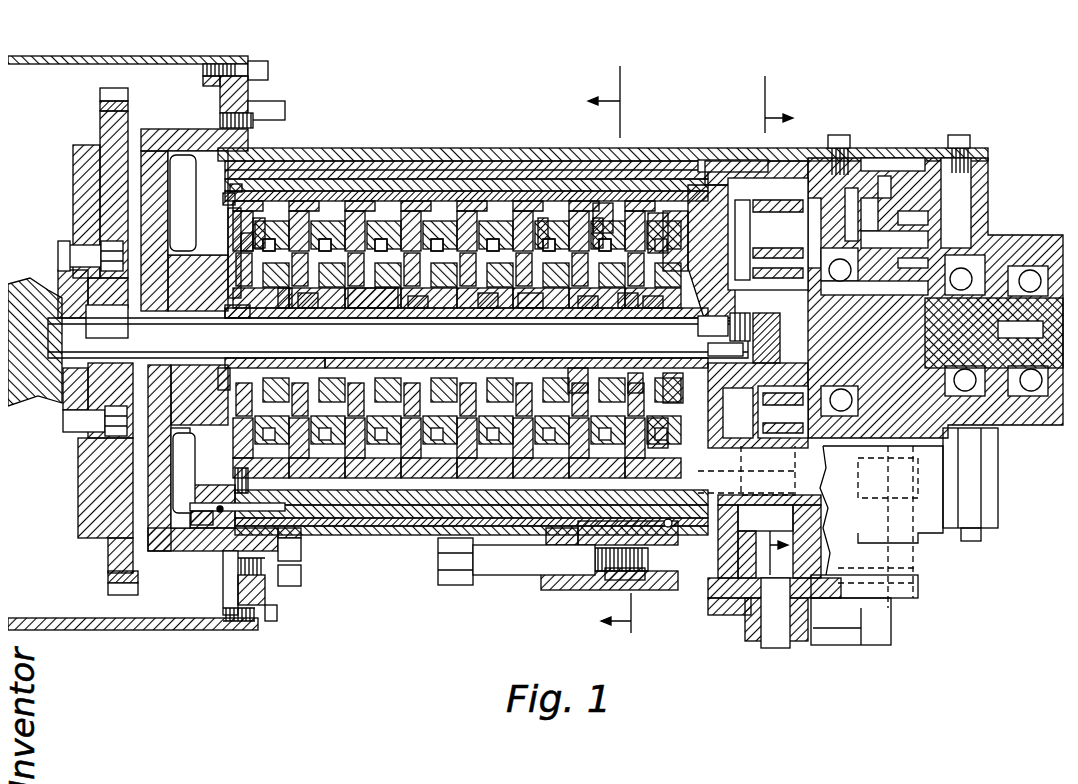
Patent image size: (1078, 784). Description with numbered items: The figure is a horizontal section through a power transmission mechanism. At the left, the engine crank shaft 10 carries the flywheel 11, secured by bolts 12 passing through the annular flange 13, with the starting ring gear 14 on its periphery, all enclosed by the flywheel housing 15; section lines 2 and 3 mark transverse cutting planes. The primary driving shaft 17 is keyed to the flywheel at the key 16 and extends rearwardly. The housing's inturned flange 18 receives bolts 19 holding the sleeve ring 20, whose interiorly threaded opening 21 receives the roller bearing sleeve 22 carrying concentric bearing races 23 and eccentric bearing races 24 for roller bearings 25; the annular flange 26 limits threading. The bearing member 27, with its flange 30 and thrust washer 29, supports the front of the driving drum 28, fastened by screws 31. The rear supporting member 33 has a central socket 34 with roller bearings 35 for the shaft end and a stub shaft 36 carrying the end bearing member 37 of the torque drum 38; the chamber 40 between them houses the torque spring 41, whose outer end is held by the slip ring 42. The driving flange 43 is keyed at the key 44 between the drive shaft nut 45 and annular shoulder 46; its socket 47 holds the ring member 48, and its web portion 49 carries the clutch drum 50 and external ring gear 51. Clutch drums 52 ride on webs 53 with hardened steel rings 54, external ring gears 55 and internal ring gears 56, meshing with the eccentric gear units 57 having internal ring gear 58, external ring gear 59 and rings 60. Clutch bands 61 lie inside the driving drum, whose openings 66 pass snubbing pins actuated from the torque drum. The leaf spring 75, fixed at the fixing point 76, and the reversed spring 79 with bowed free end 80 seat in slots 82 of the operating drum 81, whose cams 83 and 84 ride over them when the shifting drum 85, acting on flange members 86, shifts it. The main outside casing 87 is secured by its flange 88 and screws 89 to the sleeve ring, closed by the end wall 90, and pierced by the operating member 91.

The crank shaft 10 is at (18, 380).
The flywheel 11 is at (88, 497).
The bolts 12 is at (60, 245).
The annular flange 13 is at (50, 265).
The starting ring gear 14 is at (112, 580).
The flywheel housing 15 is at (95, 622).
The key 16 is at (107, 321).
The primary driving shaft 17 is at (398, 338).
The inturned flange 18 is at (214, 598).
The bolts 19 is at (270, 605).
The sleeve ring 20 is at (152, 546).
The interiorly threaded opening 21 is at (190, 436).
The roller bearing sleeve 22 is at (216, 382).
The concentric bearing races 23 is at (365, 292).
The eccentric bearing races 24 is at (435, 303).
The roller bearings 25 is at (522, 303).
The annular flange 26 is at (233, 240).
The bearing member 27 is at (222, 245).
The driving drum 28 is at (325, 170).
The thrust washer 29 is at (232, 284).
The flange 30 is at (270, 356).
The screws 31 is at (222, 182).
The supporting member 33 is at (740, 240).
The central socket 34 is at (757, 262).
The roller bearings 35 is at (770, 338).
The stub shaft 36 is at (935, 298).
The end bearing member 37 is at (925, 290).
The torque drum 38 is at (400, 172).
The chamber 40 is at (768, 234).
The torque spring 41 is at (783, 412).
The slip ring 42 is at (737, 327).
The driving flange 43 is at (690, 300).
The key 44 is at (713, 326).
The drive shaft nut 45 is at (738, 413).
The annular shoulder 46 is at (725, 349).
The socket 47 is at (662, 366).
The ring member 48 is at (630, 365).
The web portion 49 is at (645, 240).
The clutch drum 50 is at (655, 200).
The external ring gear 51 is at (658, 433).
The clutch drums 52 is at (590, 198).
The webs 53 is at (252, 242).
The hardened steel ring 54 is at (618, 303).
The external ring gears 55 is at (567, 362).
The internal ring gear 56 is at (300, 232).
The internal and external ring gear unit 57 is at (300, 303).
The internal ring gear 58 is at (457, 428).
The external ring gear 59 is at (447, 248).
The hardened steel rings 60 is at (405, 303).
The clutch bands 61 is at (330, 196).
The openings 66 is at (278, 304).
The leaf spring 75 is at (705, 505).
The fixing point 76 is at (560, 545).
The spring 79 is at (338, 497).
The bowed free end 80 is at (212, 498).
The operating drum 81 is at (455, 172).
The slots 82 is at (294, 545).
The cam 83 is at (212, 520).
The cam 84 is at (660, 519).
The shifting drum 85 is at (500, 183).
The annular flange members 86 is at (222, 192).
The main outside casing 87 is at (385, 140).
The flange 88 is at (294, 579).
The screws 89 is at (275, 102).
The end wall 90 is at (838, 147).
The operating member 91 is at (585, 582).
The section line 2 is at (619, 349).
The section line 3 is at (768, 325).